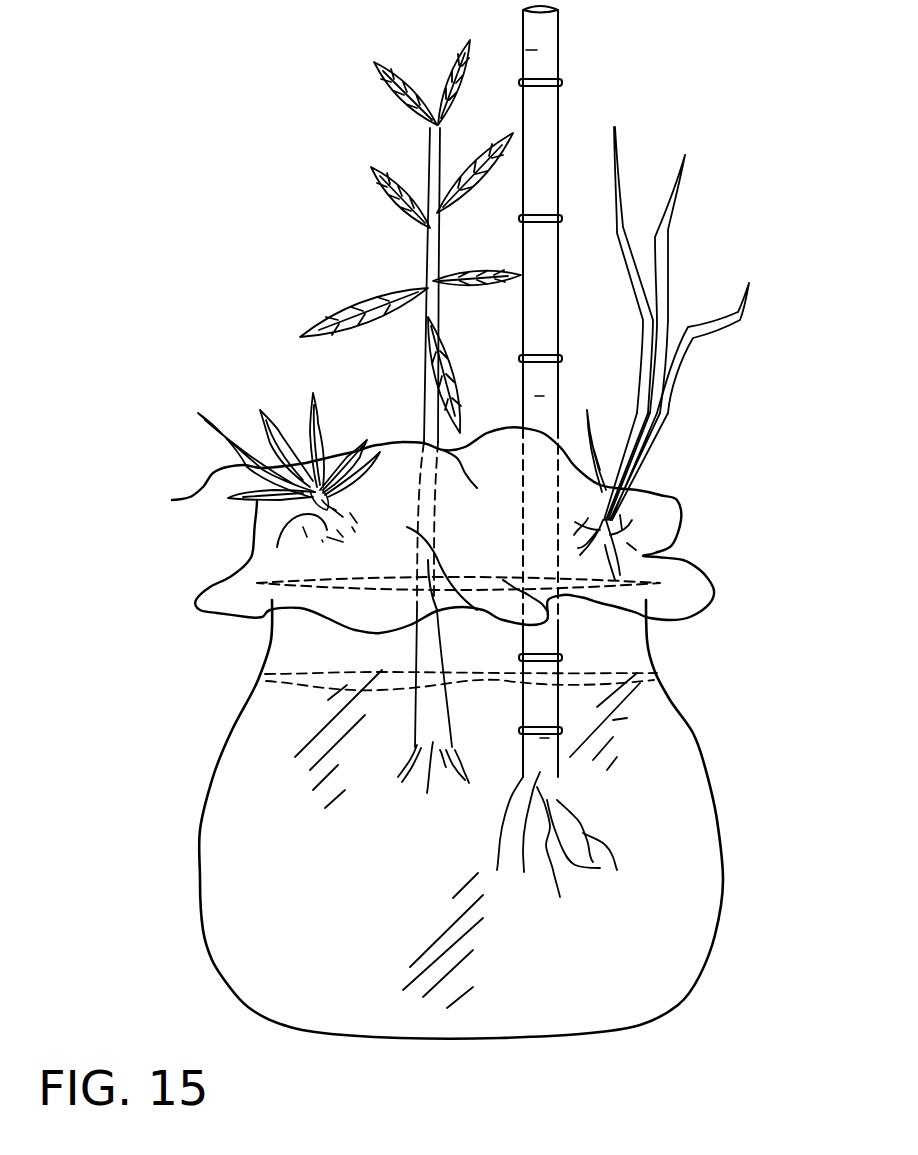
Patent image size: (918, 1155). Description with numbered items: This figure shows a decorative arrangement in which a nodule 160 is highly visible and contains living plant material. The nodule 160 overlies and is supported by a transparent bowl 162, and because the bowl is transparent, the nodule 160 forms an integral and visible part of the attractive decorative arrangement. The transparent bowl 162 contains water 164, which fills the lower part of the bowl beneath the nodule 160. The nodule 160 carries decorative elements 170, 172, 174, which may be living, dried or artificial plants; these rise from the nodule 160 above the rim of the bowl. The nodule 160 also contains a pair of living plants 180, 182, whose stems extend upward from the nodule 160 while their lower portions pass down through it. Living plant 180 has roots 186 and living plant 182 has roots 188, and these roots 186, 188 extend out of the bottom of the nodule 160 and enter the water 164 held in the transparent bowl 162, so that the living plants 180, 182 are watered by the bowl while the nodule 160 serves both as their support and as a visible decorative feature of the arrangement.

The nodule 160 is at (225, 588).
The transparent bowl 162 is at (197, 877).
The water 164 is at (240, 952).
The decorative element 170 is at (185, 497).
The decorative element 172 is at (652, 480).
The decorative element 174 is at (663, 267).
The living plant 180 is at (553, 113).
The living plant 182 is at (397, 105).
The roots 186 is at (585, 833).
The roots 188 is at (407, 763).